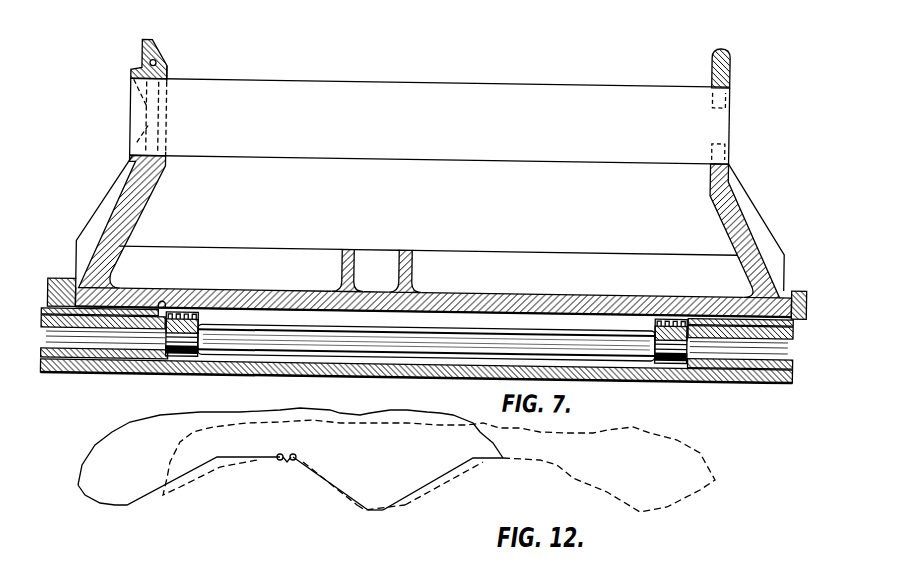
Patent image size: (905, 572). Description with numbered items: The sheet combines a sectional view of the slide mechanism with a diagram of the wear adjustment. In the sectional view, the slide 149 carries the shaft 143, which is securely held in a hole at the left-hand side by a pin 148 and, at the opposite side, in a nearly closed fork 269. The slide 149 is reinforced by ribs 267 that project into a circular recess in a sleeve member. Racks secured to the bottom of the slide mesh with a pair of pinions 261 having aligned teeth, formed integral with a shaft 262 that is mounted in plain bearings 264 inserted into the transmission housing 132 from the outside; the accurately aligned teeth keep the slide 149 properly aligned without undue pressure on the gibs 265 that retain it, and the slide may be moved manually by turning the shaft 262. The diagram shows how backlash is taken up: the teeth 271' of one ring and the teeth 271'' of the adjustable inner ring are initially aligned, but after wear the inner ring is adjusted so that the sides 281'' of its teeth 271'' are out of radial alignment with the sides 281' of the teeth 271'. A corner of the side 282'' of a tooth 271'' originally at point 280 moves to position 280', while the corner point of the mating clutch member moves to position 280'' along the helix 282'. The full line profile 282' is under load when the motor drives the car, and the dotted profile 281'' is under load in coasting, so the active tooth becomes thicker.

In FIG. 7, the shaft 143 is at (540, 97).
In FIG. 7, the pin 148 is at (155, 61).
In FIG. 7, the nearly closed fork 269 is at (730, 74).
In FIG. 7, the slide 149 is at (754, 216).
In FIG. 7, the gibs 265 is at (63, 285).
In FIG. 7, the ribs 267 is at (400, 260).
In FIG. 7, the shaft 262 is at (470, 345).
In FIG. 7, the plain bearings 264 is at (100, 357).
In FIG. 7, the pinions 261 is at (188, 361).
In FIG. 7, the transmission housing 132 is at (373, 373).
In FIG. 12, the corner point 280 is at (258, 469).
In FIG. 12, the adjusted corner position 280' is at (298, 478).
In FIG. 12, the displaced corner position 280'' is at (267, 481).
In FIG. 12, the full line tooth profile 282' is at (330, 491).
In FIG. 12, the tooth side 282'' is at (330, 503).
In FIG. 12, the teeth of outer ring 271' is at (381, 528).
In FIG. 12, the teeth of inner ring 271'' is at (403, 518).
In FIG. 12, the tooth side 281' is at (443, 487).
In FIG. 12, the tooth side of inner ring 281'' is at (451, 483).